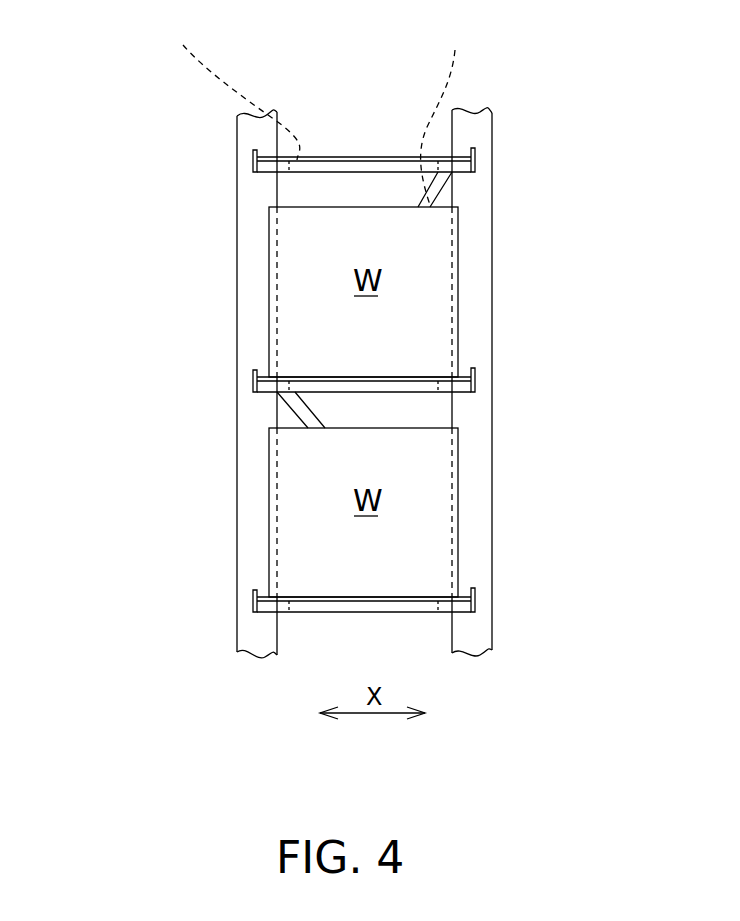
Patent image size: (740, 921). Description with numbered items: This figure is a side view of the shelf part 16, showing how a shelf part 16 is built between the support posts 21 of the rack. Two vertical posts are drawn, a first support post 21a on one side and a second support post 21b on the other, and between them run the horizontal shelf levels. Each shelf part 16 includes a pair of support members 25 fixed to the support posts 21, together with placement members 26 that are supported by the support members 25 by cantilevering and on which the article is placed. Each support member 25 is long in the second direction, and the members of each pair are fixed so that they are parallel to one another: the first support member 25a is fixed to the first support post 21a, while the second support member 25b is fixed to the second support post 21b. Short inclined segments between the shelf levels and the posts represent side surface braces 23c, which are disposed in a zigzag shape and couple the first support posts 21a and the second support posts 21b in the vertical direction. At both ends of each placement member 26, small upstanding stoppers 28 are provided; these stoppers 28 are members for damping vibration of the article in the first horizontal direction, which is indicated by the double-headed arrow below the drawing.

The support posts 21 is at (340, 378).
The first support posts 21a is at (250, 452).
The second support posts 21b is at (478, 467).
The shelf part 16 is at (368, 306).
The placement members 26 is at (352, 157).
The stoppers 28 is at (253, 152).
The side surface braces 23c is at (436, 158).
The support members 25 is at (345, 110).
The first support member 25a is at (226, 89).
The second support member 25b is at (450, 140).